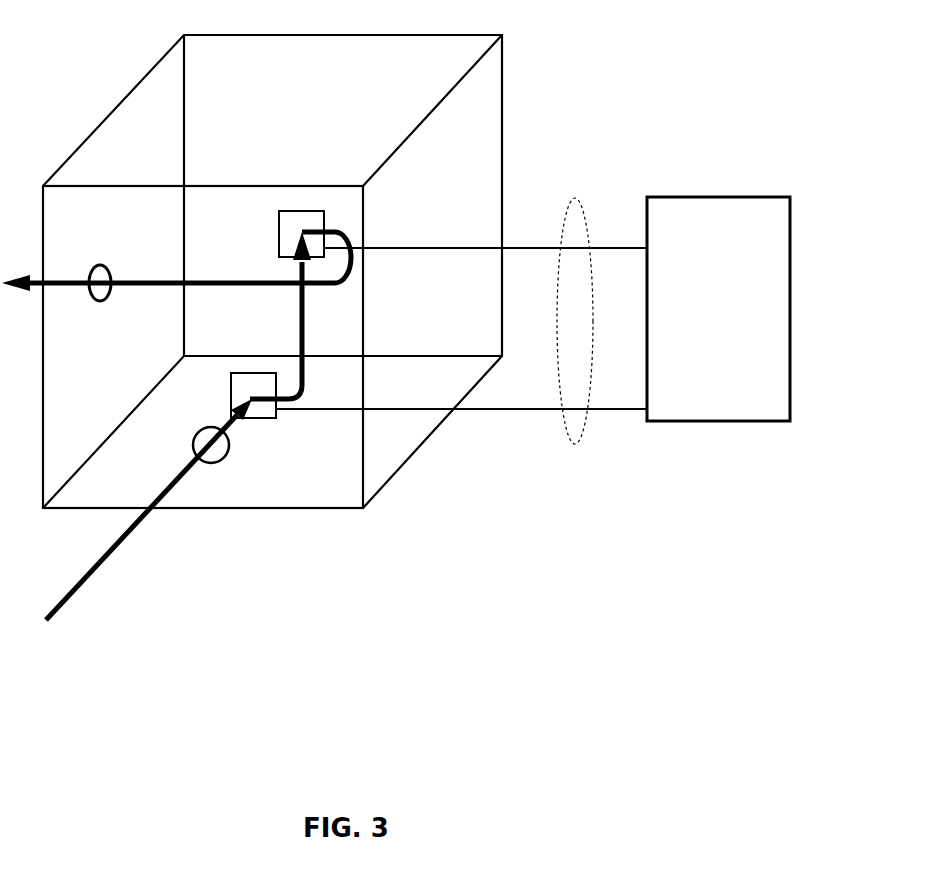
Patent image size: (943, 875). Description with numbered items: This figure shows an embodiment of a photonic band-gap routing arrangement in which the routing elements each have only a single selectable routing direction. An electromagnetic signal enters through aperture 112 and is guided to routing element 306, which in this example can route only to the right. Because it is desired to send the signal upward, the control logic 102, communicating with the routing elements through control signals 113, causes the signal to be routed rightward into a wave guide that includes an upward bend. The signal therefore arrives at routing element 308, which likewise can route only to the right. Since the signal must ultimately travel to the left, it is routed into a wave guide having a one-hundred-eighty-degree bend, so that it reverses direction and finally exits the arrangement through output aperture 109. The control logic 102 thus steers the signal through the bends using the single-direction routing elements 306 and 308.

The control logic 102 is at (718, 309).
The output aperture 109 is at (96, 265).
The entering aperture 112 is at (209, 463).
The control signals 113 is at (575, 447).
The routing element 306 is at (276, 420).
The routing element 308 is at (322, 211).